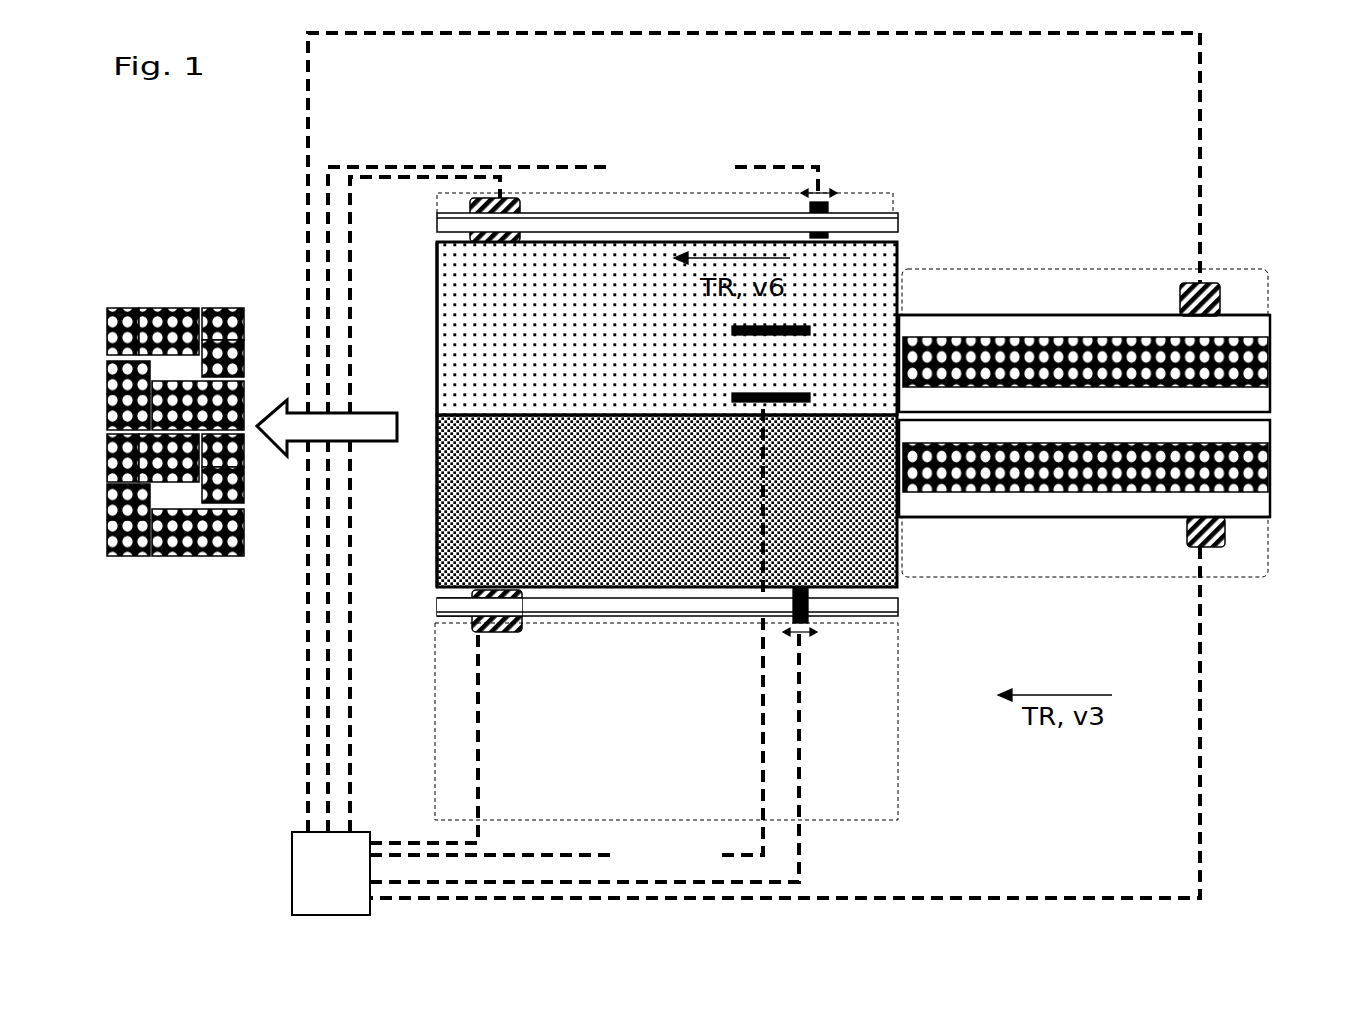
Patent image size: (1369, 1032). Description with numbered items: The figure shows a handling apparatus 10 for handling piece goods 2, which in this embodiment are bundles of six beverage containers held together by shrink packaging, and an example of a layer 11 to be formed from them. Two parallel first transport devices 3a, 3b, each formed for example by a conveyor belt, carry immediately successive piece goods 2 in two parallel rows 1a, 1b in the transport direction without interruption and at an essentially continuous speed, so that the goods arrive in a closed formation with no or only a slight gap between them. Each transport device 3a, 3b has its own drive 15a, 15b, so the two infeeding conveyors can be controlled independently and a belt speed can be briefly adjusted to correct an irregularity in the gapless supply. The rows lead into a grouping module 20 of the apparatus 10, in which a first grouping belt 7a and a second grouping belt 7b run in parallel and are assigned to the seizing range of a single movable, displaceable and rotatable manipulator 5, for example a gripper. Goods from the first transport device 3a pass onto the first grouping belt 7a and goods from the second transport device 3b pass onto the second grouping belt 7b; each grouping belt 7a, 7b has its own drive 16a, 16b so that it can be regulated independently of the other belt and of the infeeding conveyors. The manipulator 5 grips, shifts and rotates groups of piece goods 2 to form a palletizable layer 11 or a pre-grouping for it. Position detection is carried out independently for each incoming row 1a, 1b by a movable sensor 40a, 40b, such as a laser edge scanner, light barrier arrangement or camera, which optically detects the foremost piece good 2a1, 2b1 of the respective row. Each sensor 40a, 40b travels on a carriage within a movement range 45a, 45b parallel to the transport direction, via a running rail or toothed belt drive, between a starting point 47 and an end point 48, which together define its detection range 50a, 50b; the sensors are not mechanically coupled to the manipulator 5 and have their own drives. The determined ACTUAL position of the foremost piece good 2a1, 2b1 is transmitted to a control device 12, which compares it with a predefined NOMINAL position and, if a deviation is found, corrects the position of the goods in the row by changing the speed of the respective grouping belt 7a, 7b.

The handling apparatus 10 is at (1038, 138).
The control device 12 is at (345, 893).
The grouping module 20 is at (665, 825).
The manipulator 5 is at (732, 330).
The first grouping belt 7a is at (527, 292).
The second grouping belt 7b is at (522, 572).
The detection range 50a is at (438, 340).
The detection range 50b is at (438, 500).
The movement range 45a is at (665, 193).
The movement range 45b is at (667, 623).
The drive 16a is at (510, 200).
The drive 16b is at (490, 632).
The movable sensor 40a is at (830, 202).
The movable sensor 40b is at (808, 625).
The starting point 47 is at (898, 225).
The end point 48 is at (437, 222).
The first row 1a is at (1083, 269).
The second row 1b is at (1088, 577).
The foremost piece good 2a1 is at (925, 337).
The foremost piece good 2b1 is at (912, 493).
The drive 15a is at (1208, 283).
The drive 15b is at (1215, 547).
The first transport device 3a is at (1222, 322).
The second transport device 3b is at (1243, 508).
The piece goods 2 is at (181, 308).
The layer 11 is at (161, 599).